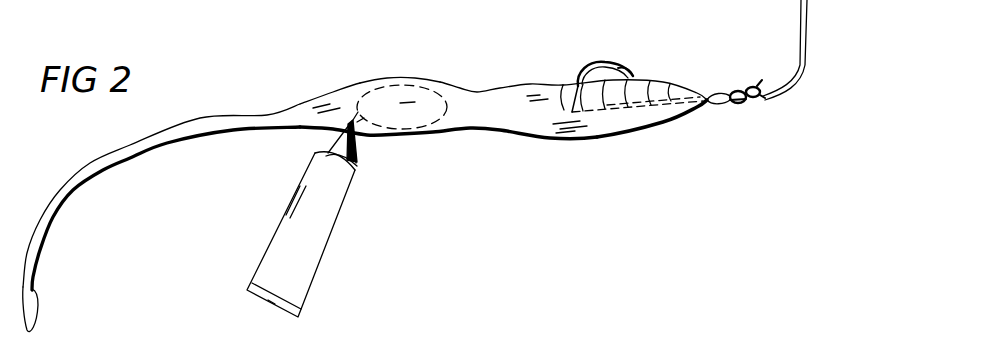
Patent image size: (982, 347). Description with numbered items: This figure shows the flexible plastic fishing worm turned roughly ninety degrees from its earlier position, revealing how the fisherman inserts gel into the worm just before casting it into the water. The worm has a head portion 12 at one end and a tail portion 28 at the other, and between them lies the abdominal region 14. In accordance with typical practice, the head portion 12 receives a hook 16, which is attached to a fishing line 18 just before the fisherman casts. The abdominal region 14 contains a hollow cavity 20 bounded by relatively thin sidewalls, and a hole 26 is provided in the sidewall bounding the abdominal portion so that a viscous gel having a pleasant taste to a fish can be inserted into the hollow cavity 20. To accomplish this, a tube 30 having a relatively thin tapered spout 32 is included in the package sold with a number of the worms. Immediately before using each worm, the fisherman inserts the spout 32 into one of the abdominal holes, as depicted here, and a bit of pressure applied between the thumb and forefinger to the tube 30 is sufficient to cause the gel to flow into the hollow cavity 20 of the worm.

The head portion 12 is at (687, 122).
The abdominal region 14 is at (435, 134).
The hook 16 is at (592, 62).
The fishing line 18 is at (808, 17).
The hollow cavity 20 is at (383, 83).
The hole 26 is at (443, 83).
The tail portion 28 is at (104, 168).
The tube 30 is at (312, 265).
The tapered spout 32 is at (343, 140).